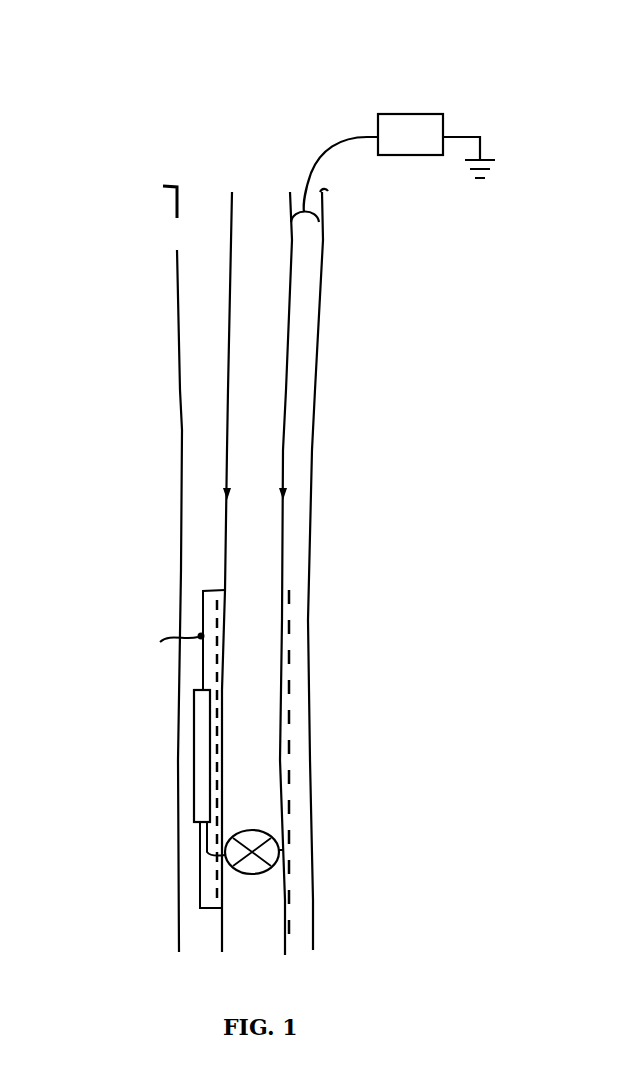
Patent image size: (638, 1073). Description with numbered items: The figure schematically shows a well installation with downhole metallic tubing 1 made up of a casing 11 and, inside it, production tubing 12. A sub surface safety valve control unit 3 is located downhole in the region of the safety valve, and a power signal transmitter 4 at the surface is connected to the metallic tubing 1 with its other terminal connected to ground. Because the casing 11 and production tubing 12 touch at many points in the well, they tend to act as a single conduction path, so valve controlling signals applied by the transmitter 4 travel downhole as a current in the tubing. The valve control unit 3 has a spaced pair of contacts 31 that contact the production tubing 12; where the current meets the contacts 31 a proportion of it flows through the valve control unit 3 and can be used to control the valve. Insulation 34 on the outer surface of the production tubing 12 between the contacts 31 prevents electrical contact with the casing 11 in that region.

The downhole metallic tubing 1 is at (172, 402).
The casing 11 is at (180, 446).
The production tubing 12 is at (287, 427).
The sub surface safety valve control unit 3 is at (200, 764).
The spaced pair of contacts 31 is at (225, 590).
The insulation 34 is at (290, 622).
The power signal transmitter 4 is at (422, 121).